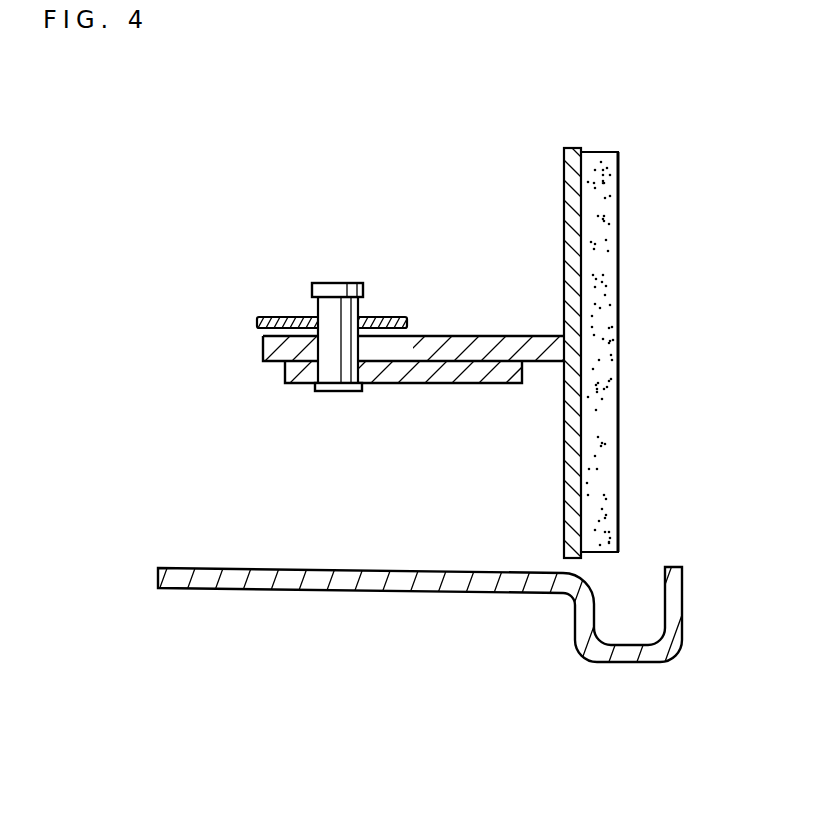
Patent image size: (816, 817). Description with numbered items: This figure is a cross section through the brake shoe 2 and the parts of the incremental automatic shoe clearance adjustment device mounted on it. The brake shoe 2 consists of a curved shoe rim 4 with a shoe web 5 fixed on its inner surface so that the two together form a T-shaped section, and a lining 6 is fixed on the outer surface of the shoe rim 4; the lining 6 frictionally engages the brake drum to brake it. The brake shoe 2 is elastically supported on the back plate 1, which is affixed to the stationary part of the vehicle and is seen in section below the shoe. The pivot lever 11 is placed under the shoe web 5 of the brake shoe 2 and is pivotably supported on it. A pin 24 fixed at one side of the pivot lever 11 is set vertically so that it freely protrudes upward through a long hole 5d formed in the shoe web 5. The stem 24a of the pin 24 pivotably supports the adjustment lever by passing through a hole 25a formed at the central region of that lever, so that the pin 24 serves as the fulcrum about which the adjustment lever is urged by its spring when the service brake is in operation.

The back plate 1 is at (401, 591).
The brake shoe 2 is at (632, 309).
The shoe rim 4 is at (576, 148).
The shoe web 5 is at (412, 309).
The long hole 5d is at (403, 347).
The lining 6 is at (612, 180).
The pivot lever 11 is at (443, 384).
The pin 24 is at (286, 369).
The stem 24a is at (320, 308).
The hole 25a is at (372, 318).